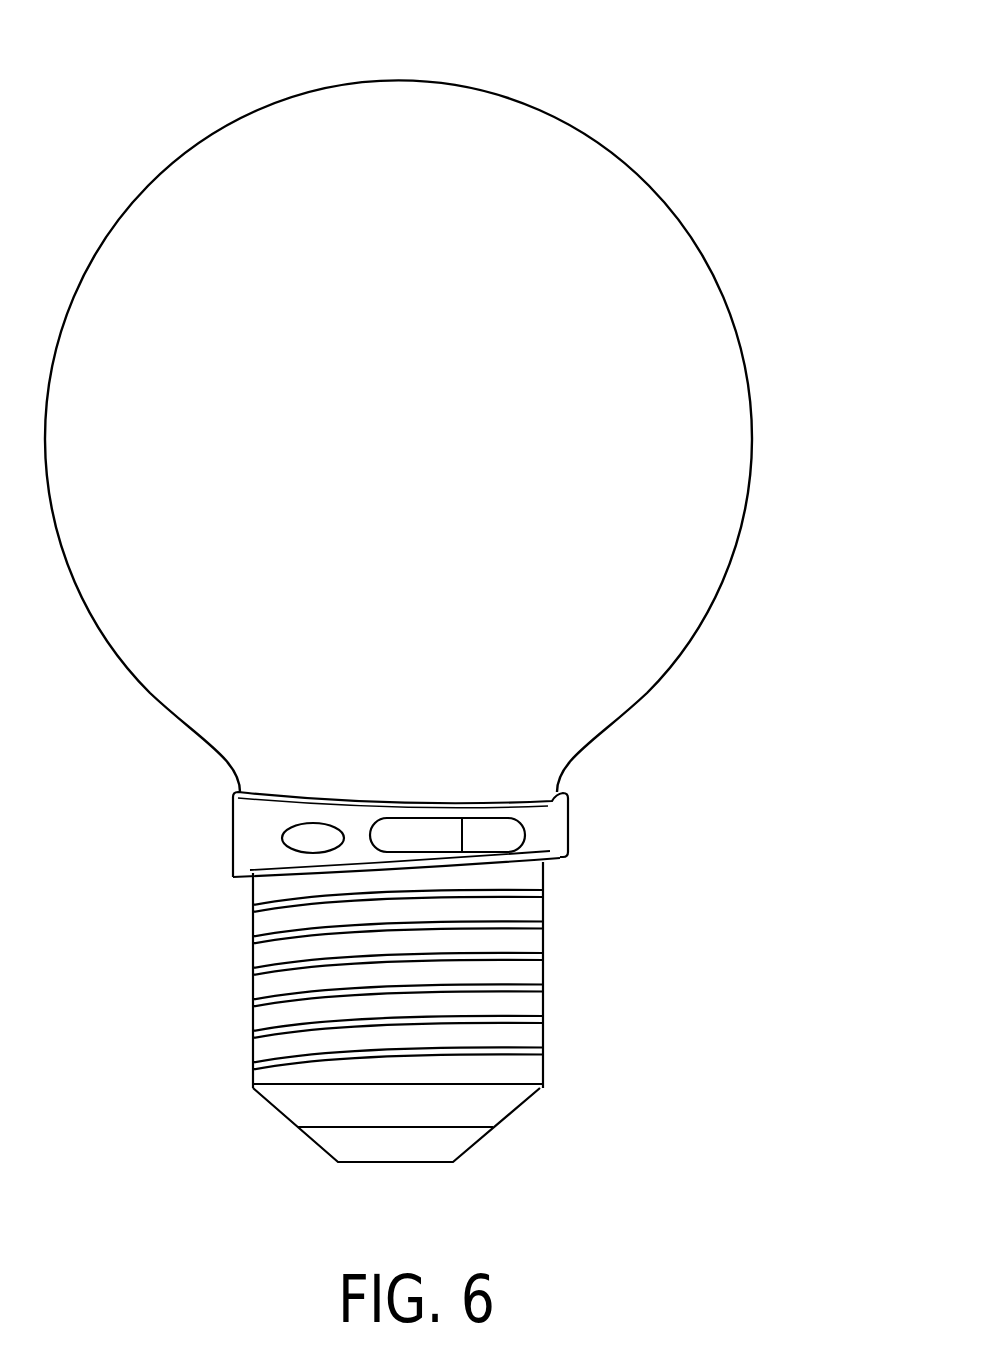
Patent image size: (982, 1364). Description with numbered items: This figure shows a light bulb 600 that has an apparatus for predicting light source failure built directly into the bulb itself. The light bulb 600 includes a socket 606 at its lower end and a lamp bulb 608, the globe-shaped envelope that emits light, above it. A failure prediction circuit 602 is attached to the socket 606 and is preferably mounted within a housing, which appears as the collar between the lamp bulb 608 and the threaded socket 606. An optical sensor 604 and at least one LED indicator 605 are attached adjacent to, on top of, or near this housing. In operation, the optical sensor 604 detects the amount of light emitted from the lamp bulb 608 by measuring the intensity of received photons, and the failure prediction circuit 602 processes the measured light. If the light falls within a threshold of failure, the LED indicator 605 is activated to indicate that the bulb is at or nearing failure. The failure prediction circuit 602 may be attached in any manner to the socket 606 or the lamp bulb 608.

The light bulb 600 is at (658, 79).
The failure prediction circuit 602 is at (570, 817).
The optical sensor 604 is at (512, 838).
The LED indicator 605 is at (283, 838).
The socket 606 is at (310, 1142).
The lamp bulb 608 is at (738, 404).